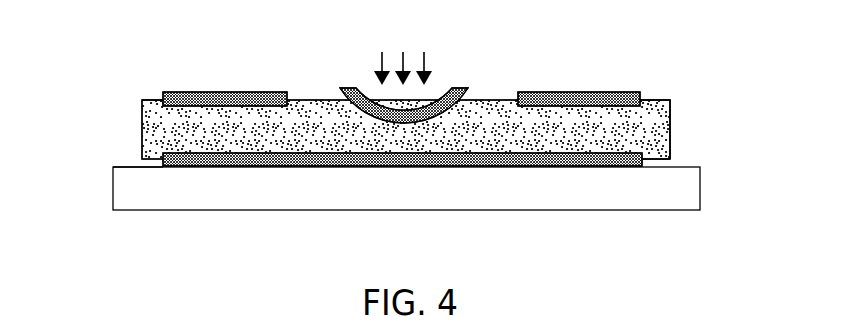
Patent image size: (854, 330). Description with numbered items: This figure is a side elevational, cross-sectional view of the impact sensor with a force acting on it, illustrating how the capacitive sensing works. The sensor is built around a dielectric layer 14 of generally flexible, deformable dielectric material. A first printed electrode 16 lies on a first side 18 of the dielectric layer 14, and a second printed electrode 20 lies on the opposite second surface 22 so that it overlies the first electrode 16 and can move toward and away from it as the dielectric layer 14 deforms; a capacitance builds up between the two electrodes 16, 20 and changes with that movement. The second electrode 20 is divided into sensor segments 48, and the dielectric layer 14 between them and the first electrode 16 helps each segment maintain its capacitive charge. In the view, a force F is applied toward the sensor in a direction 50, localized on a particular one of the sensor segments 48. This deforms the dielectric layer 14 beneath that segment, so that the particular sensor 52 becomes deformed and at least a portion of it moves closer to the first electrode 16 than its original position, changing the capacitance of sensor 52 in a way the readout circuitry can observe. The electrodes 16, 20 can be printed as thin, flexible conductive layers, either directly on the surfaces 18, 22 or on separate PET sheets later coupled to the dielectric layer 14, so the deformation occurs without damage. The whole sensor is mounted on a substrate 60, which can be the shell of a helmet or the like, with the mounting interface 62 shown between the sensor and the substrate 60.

The dielectric layer 14 is at (661, 134).
The first printed electrode 16 is at (603, 166).
The first side 18 is at (665, 163).
The second printed electrode 20 is at (150, 94).
The second surface 22 is at (660, 100).
The sensor segments 48 is at (225, 92).
The direction 50 is at (427, 60).
The sensor 52 is at (352, 89).
The substrate 60 is at (165, 200).
The substrate surface 62 is at (128, 166).
The force F is at (419, 43).